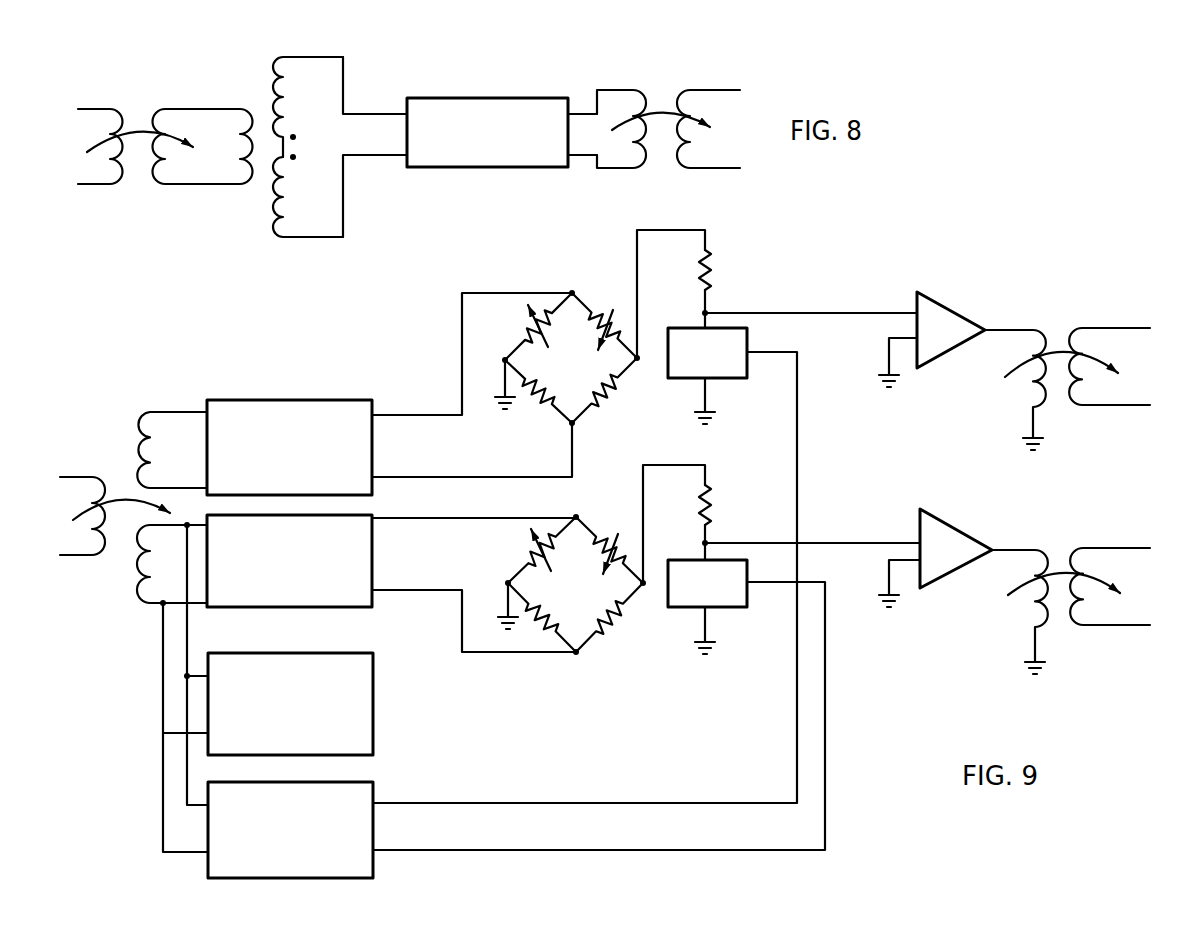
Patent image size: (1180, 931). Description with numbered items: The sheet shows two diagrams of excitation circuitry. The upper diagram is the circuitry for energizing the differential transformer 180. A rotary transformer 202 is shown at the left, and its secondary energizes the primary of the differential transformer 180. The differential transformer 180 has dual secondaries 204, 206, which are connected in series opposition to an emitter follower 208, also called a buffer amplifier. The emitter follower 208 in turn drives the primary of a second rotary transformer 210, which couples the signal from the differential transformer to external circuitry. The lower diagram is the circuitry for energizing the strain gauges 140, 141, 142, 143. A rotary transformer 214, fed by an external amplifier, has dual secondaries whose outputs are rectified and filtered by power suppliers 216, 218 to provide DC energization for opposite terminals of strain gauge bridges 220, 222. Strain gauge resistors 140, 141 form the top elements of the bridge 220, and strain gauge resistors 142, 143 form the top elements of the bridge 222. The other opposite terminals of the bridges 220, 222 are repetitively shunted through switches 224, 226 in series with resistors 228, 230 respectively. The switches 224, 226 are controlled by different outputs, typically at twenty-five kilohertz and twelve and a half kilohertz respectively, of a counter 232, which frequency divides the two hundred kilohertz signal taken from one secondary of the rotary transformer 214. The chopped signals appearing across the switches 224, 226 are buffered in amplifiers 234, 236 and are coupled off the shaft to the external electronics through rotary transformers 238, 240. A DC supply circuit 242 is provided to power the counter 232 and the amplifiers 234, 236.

In FIG. 8, the differential transformer 180 is at (253, 195).
In FIG. 8, the rotary transformer 202 is at (143, 112).
In FIG. 8, the dual secondary 204 is at (273, 90).
In FIG. 8, the dual secondary 206 is at (273, 228).
In FIG. 8, the emitter follower 208 is at (462, 97).
In FIG. 8, the rotary transformer 210 is at (660, 90).
In FIG. 9, the rotary transformer 214 is at (123, 477).
In FIG. 9, the power supplier 216 is at (275, 400).
In FIG. 9, the power supplier 218 is at (373, 548).
In FIG. 9, the strain gauge bridge 220 is at (567, 358).
In FIG. 9, the strain gauge bridge 222 is at (572, 584).
In FIG. 9, the strain gauge resistor 140 is at (527, 335).
In FIG. 9, the strain gauge resistor 141 is at (602, 312).
In FIG. 9, the strain gauge resistor 142 is at (530, 560).
In FIG. 9, the strain gauge resistor 143 is at (612, 537).
In FIG. 9, the switch 224 is at (688, 380).
In FIG. 9, the switch 226 is at (688, 608).
In FIG. 9, the resistor 228 is at (712, 268).
In FIG. 9, the resistor 230 is at (712, 503).
In FIG. 9, the counter 232 is at (375, 860).
In FIG. 9, the amplifier 234 is at (940, 313).
In FIG. 9, the amplifier 236 is at (940, 530).
In FIG. 9, the rotary transformer 238 is at (1060, 322).
In FIG. 9, the rotary transformer 240 is at (1065, 543).
In FIG. 9, the DC supply circuit 242 is at (375, 672).